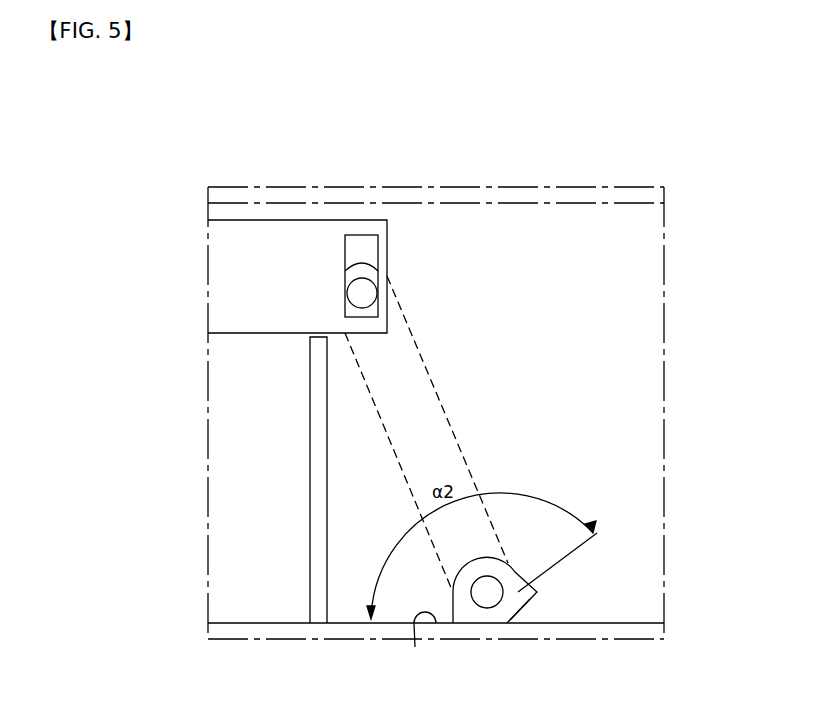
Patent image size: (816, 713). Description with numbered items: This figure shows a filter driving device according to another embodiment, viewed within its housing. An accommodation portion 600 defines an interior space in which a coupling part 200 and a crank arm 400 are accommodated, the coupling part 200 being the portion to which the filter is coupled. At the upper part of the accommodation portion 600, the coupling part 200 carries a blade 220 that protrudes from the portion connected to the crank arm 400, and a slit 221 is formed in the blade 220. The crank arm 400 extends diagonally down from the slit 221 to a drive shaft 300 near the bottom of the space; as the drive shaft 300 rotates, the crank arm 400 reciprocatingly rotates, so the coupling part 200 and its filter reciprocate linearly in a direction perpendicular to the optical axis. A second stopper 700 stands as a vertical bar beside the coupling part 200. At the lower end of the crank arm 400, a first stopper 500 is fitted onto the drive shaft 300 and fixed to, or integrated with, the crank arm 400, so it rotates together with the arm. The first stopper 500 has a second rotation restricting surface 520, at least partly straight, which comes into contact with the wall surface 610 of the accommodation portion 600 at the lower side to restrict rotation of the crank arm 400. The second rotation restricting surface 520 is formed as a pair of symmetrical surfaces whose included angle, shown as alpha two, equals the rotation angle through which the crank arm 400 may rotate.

The accommodation portion 600 is at (181, 168).
The coupling part 200 is at (267, 130).
The blade 220 is at (281, 240).
The slit 221 is at (368, 253).
The crank arm 400 is at (428, 415).
The second stopper 700 is at (318, 583).
The first stopper 500 is at (535, 596).
The drive shaft 300 is at (481, 606).
The second rotation restricting surface 520 is at (515, 612).
The wall surface 610 is at (393, 567).